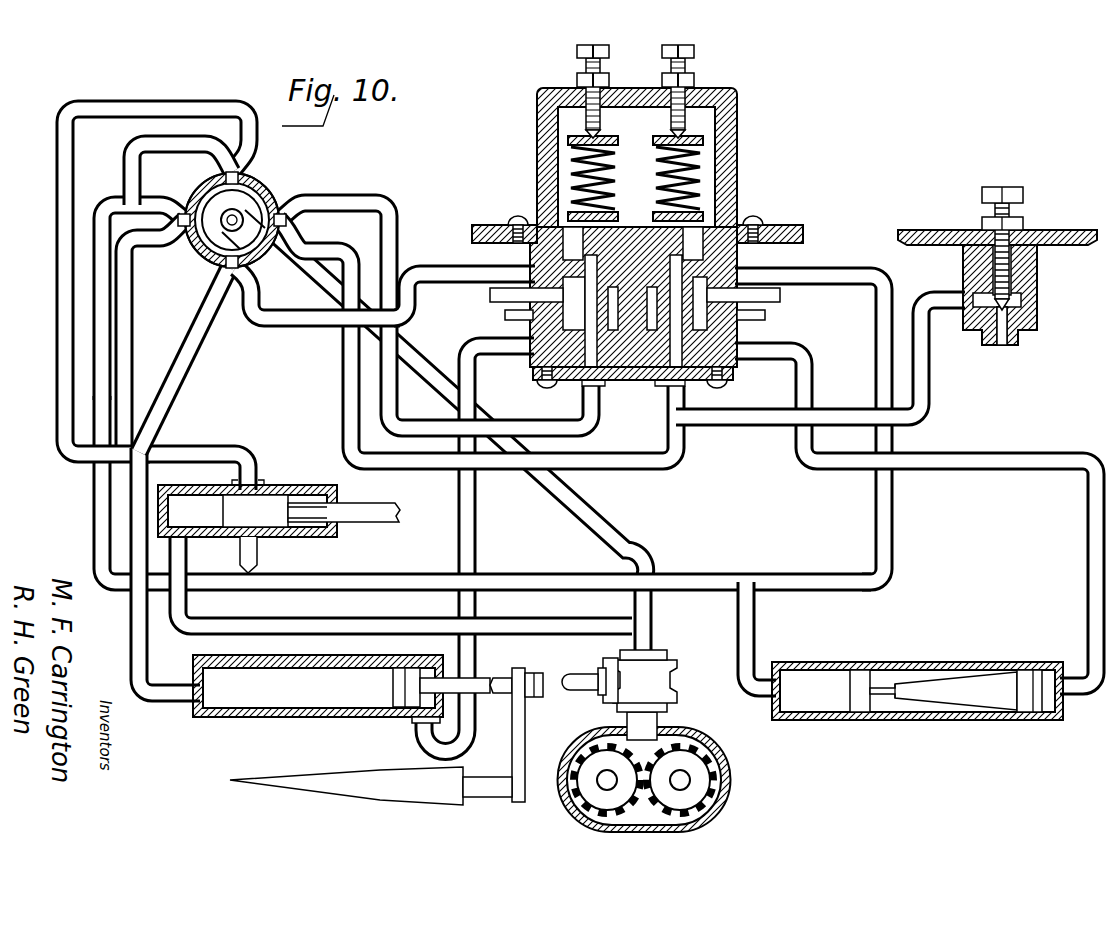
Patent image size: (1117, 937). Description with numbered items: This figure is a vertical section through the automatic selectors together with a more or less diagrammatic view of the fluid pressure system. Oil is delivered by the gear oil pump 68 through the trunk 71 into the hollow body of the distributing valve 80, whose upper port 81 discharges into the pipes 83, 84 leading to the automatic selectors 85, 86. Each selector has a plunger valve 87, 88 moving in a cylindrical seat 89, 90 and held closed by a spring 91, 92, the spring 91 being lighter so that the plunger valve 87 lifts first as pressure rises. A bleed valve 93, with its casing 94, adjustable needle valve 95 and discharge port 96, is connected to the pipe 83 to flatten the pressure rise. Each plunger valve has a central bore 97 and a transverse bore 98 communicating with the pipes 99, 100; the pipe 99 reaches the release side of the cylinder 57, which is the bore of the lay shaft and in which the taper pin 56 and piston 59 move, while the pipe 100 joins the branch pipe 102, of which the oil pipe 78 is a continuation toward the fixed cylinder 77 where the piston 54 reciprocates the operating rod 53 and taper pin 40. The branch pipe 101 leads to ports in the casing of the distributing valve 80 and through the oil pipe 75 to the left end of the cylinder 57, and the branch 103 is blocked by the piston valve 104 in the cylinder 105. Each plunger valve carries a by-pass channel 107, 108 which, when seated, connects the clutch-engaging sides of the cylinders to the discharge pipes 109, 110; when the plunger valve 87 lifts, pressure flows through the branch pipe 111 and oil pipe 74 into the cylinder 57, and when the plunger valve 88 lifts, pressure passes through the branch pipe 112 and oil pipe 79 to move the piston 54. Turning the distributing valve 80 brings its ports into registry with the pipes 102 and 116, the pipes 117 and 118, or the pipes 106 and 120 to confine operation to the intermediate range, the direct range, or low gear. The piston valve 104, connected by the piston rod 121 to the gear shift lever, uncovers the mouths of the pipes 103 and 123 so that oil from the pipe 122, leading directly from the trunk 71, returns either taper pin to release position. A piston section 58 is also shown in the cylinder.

The taper pin 40 is at (360, 800).
The operating rod 53 is at (486, 681).
The piston 54 is at (408, 668).
The taper pin 56 is at (972, 717).
The cylinder 57 is at (917, 710).
The plug 58 is at (1032, 726).
The piston 59 is at (866, 721).
The gear oil pump 68 is at (716, 771).
The trunk 71 is at (618, 534).
The oil pipe 74 is at (1090, 577).
The oil pipe 75 is at (745, 700).
The fixed cylinder 77 is at (368, 719).
The oil pipe 78 is at (128, 626).
The oil pipe 79 is at (470, 545).
The distributing valve 80 is at (240, 212).
The upper port 81 is at (268, 209).
The pipe 83 is at (316, 246).
The pipe 84 is at (344, 201).
The automatic selector 85 is at (760, 212).
The automatic selector 86 is at (512, 222).
The plunger valve 87 is at (720, 288).
The plunger valve 88 is at (639, 216).
The cylindrical seat 89 is at (776, 228).
The cylindrical seat 90 is at (537, 260).
The spring 91 is at (705, 158).
The spring 92 is at (567, 160).
The bleed valve 93 is at (886, 302).
The casing 94 is at (1040, 270).
The adjustable needle valve 95 is at (1028, 232).
The discharge port 96 is at (1003, 346).
The central bore 97 is at (587, 313).
The transverse bore 98 is at (574, 266).
The pipe 99 is at (862, 283).
The pipe 100 is at (420, 278).
The branch pipe 101 is at (92, 508).
The branch pipe 102 is at (196, 358).
The branch 103 is at (248, 453).
The piston valve 104 is at (268, 502).
The cylinder 105 is at (279, 512).
The pipe 106 is at (251, 120).
The by-pass channel 107 is at (766, 316).
The by-pass channel 108 is at (492, 295).
The discharge pipe 109 is at (781, 298).
The discharge pipe 110 is at (480, 304).
The branch pipe 111 is at (744, 358).
The branch pipe 112 is at (516, 356).
The pipe 116 is at (254, 295).
The pipe 117 is at (154, 198).
The pipe 118 is at (149, 248).
The pipe 120 is at (212, 148).
The piston rod 121 is at (382, 523).
The pipe 122 is at (542, 624).
The pipe 123 is at (262, 557).